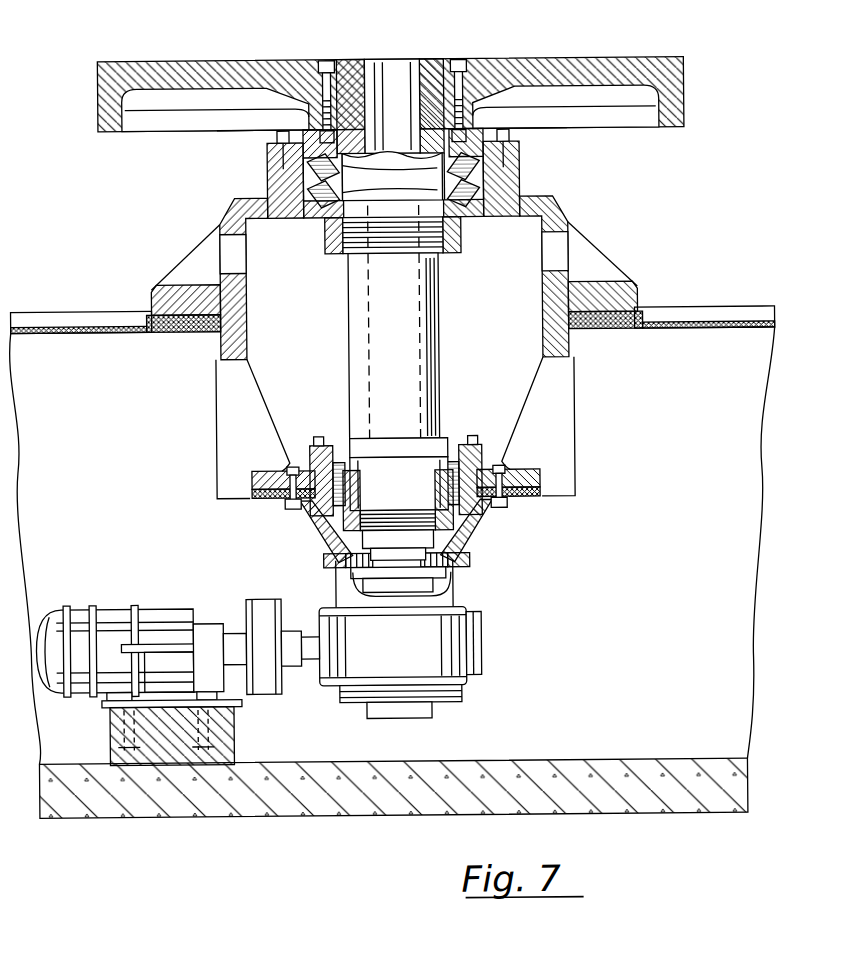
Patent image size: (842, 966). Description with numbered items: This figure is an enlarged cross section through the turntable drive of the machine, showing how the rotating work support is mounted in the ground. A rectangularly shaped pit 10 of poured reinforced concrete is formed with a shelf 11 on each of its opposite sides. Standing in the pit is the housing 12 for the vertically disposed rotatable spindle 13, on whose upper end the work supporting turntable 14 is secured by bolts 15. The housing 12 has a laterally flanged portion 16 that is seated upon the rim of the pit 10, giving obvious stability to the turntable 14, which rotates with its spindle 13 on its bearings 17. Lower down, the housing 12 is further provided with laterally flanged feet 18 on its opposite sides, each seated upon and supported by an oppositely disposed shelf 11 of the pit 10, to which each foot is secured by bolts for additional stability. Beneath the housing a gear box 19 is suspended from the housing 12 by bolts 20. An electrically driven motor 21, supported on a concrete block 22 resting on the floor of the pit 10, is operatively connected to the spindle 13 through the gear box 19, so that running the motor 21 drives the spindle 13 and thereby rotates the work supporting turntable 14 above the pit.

The pit 10 is at (630, 631).
The shelf 11 is at (232, 492).
The housing 12 is at (503, 362).
The spindle 13 is at (407, 344).
The work supporting turntable 14 is at (513, 62).
The bolts 15 is at (323, 62).
The laterally flanged portion 16 is at (155, 297).
The bearings 17 is at (446, 170).
The laterally flanged feet 18 is at (262, 470).
The gear box 19 is at (401, 652).
The bolts 20 is at (291, 505).
The electrically driven motor 21 is at (108, 618).
The concrete block 22 is at (228, 737).